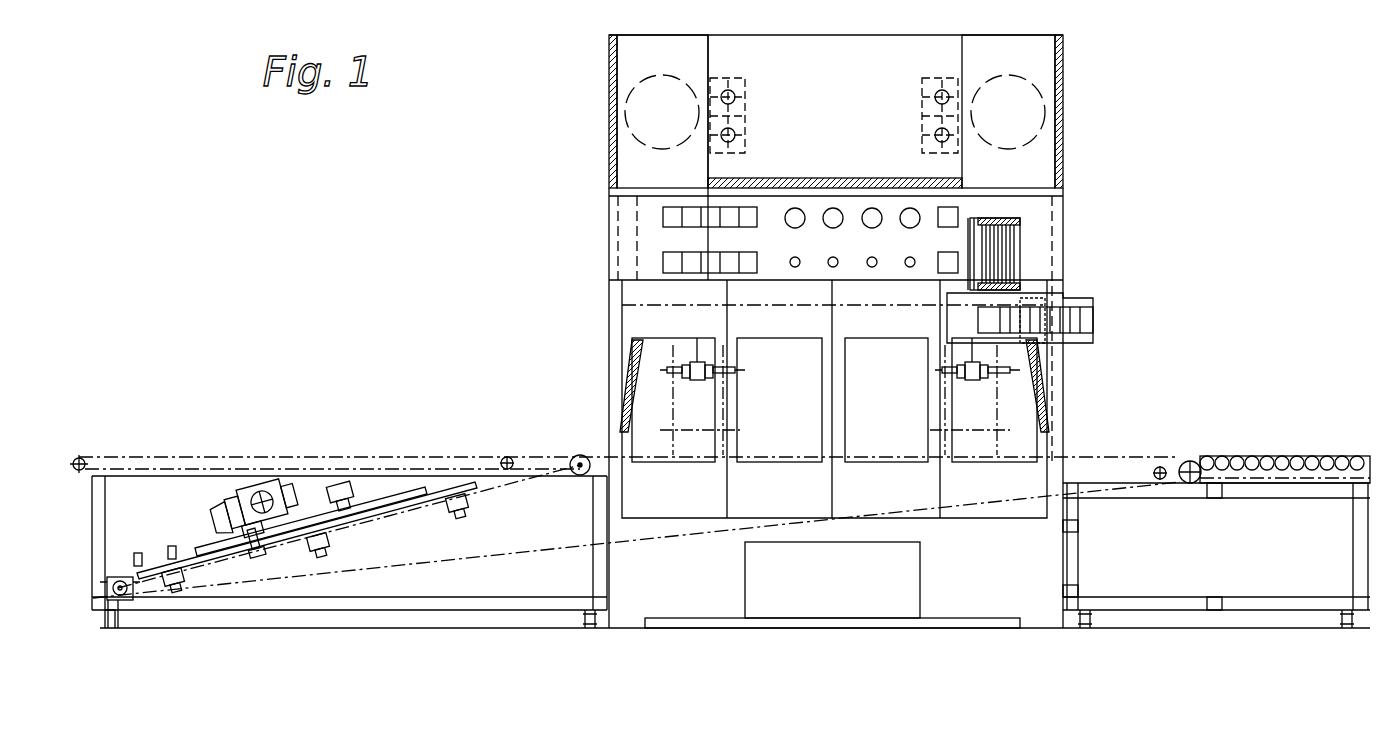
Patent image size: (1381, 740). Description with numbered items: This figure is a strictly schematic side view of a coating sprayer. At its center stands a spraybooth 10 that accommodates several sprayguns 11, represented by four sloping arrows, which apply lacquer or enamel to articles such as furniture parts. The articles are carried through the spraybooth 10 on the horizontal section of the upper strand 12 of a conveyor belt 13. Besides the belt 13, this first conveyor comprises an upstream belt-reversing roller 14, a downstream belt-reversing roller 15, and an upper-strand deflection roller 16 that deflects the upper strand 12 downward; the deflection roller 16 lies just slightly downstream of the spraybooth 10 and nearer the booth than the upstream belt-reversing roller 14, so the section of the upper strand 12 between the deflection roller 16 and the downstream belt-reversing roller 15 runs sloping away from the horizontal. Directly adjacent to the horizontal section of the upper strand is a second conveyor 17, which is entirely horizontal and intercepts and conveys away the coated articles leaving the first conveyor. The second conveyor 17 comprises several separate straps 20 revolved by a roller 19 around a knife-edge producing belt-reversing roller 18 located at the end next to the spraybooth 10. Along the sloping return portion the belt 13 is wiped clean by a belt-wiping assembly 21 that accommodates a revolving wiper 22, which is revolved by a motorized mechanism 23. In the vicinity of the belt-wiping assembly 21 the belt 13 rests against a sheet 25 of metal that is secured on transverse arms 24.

The spraybooth 10 is at (1092, 246).
The sprayguns 11 is at (700, 455).
The upper strand 12 is at (1122, 457).
The belt 13 is at (516, 556).
The upstream belt-reversing roller 14 is at (1191, 461).
The downstream belt-reversing roller 15 is at (112, 597).
The upper-strand deflection roller 16 is at (579, 455).
The second conveyor 17 is at (318, 452).
The knife-edge producing belt-reversing roller 18 is at (513, 456).
The roller 19 is at (79, 456).
The straps 20 is at (123, 457).
The belt-wiping assembly 21 is at (308, 500).
The revolving wiper 22 is at (390, 500).
The motorized mechanism 23 is at (243, 485).
The transverse arms 24 is at (160, 578).
The sheet of metal 25 is at (257, 540).